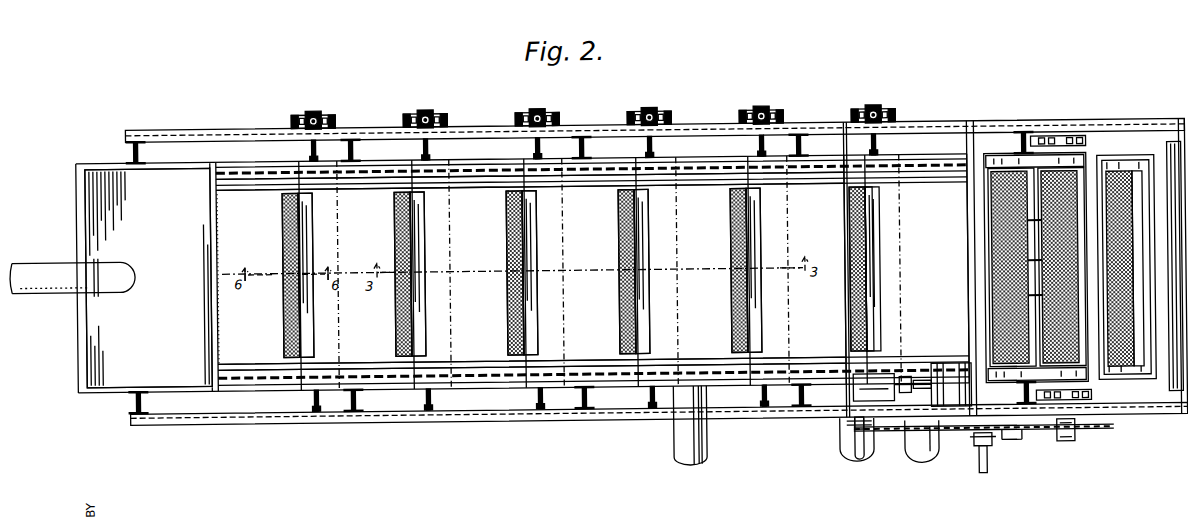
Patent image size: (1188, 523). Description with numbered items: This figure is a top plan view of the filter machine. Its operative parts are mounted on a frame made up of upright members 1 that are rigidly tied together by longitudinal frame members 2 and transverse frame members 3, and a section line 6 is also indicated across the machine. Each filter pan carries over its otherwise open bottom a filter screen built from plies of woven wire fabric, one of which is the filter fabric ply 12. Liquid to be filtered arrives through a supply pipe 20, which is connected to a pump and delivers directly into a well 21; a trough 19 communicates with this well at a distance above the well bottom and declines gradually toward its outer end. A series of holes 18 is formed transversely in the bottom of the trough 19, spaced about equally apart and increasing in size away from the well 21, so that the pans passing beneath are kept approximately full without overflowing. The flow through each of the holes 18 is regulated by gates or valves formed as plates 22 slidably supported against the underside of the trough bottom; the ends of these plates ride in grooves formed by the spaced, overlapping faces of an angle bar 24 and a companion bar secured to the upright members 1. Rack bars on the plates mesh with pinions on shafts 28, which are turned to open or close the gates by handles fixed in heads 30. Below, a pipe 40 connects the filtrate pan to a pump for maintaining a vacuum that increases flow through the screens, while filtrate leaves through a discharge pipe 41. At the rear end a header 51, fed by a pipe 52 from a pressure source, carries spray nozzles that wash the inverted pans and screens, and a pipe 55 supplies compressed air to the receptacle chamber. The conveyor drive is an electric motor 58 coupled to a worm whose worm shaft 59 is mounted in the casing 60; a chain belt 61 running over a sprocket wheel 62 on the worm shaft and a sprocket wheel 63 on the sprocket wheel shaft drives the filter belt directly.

The upright members 1 is at (140, 149).
The longitudinal frame members 2 is at (700, 125).
The transverse frame members 3 is at (845, 212).
The section line 6- 6 is at (286, 274).
The filter fabric ply 12 is at (300, 219).
The holes 18 is at (283, 304).
The trough 19 is at (463, 366).
The supply pipe 20 is at (28, 289).
The well 21 is at (148, 277).
The plates 22 is at (313, 253).
The angle bar 24 is at (587, 170).
The shafts 28 is at (313, 148).
The heads 30 is at (329, 112).
The pipe 40 is at (852, 466).
The discharge pipe 41 is at (934, 487).
The header 51 is at (1036, 267).
The pipe 52 is at (973, 453).
The pipe 55 is at (705, 444).
The electric motor 58 is at (951, 384).
The worm shaft 59 is at (906, 372).
The casing 60 is at (873, 387).
The chain belt 61 is at (1012, 434).
The sprocket wheel 62 is at (853, 431).
The sprocket wheel 63 is at (1112, 432).